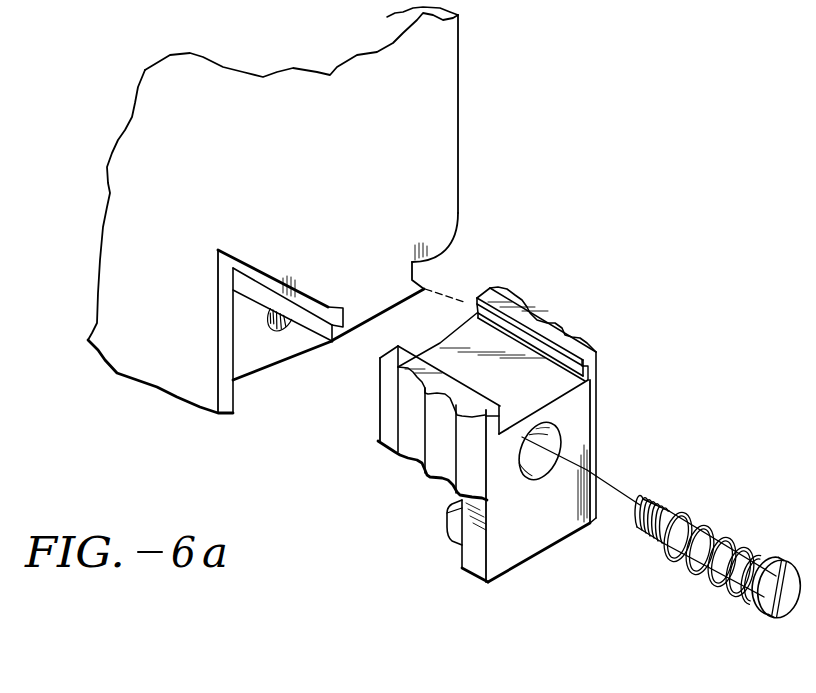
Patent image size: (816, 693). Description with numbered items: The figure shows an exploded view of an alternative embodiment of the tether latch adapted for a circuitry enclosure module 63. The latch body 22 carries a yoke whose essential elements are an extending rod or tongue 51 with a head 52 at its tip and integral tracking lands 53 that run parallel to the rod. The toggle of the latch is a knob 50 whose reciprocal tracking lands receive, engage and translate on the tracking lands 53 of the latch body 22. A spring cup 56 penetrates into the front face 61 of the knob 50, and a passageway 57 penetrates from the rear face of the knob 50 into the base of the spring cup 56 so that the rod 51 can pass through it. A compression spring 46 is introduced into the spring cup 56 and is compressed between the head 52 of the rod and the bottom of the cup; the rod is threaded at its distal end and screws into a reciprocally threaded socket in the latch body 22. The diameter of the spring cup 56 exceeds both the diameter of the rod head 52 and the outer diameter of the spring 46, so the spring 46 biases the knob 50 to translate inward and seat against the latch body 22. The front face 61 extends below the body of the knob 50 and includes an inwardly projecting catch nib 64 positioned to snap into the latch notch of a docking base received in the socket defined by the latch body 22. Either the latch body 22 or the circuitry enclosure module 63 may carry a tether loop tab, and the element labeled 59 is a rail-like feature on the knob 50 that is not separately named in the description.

The latch body 22 is at (294, 210).
The circuitry enclosure module 63 is at (260, 77).
The tracking lands 53 is at (331, 343).
The knob 50 is at (383, 408).
The rail 59 is at (530, 300).
The front face 61 is at (538, 481).
The spring cup 56 is at (550, 443).
The catch nib 64 is at (450, 528).
The extending rod or tongue 51 is at (648, 528).
The passageway 57 is at (706, 573).
The compression spring 46 is at (727, 540).
The head 52 is at (770, 620).